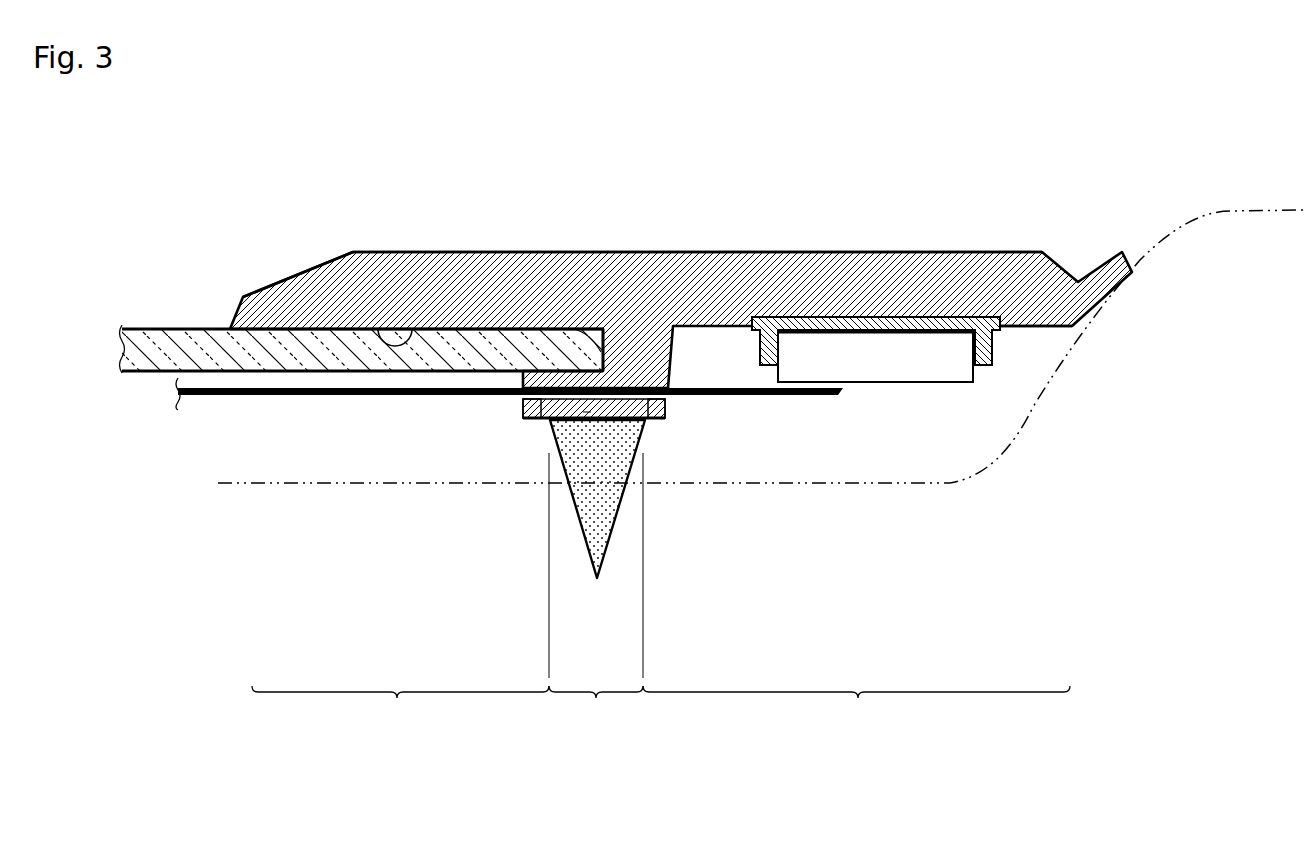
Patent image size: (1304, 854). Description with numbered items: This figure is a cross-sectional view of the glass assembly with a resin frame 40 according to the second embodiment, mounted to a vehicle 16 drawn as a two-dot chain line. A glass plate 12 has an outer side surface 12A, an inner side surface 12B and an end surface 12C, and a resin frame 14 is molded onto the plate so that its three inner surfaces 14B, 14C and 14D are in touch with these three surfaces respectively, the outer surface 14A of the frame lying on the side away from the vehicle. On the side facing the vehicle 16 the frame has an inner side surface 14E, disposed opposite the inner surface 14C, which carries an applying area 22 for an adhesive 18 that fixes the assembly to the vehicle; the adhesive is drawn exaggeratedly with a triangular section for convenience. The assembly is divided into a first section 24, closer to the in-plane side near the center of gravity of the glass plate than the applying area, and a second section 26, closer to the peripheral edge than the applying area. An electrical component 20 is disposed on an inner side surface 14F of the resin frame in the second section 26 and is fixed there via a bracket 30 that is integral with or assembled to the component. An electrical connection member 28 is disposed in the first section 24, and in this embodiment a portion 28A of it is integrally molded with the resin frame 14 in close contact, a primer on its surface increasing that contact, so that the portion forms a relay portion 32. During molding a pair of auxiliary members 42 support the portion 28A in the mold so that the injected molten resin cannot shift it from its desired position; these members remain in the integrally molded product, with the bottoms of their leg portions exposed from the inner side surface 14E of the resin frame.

The glass assembly with a resin frame 40 is at (855, 138).
The resin frame 14 is at (933, 240).
The outer surface of the resin frame 14A is at (773, 251).
The inner surface 14B is at (386, 333).
The inner surface 14C is at (543, 363).
The inner surface 14D is at (583, 338).
The inner side surface 14E is at (655, 420).
The inner side surface 14F is at (912, 332).
The glass plate 12 is at (139, 316).
The outer side surface 12A is at (190, 327).
The inner side surface 12B is at (135, 373).
The end surface 12C is at (606, 345).
The electrical connection member 28 is at (260, 410).
The portion of the electrical connection member 28A is at (642, 388).
The bracket 30 is at (995, 348).
The electrical component 20 is at (882, 384).
The auxiliary members 42 is at (523, 405).
The relay portion 32 is at (591, 422).
The adhesive 18 is at (590, 530).
The vehicle 16 is at (1272, 210).
The applying area 22 is at (596, 591).
The first section 24 is at (400, 708).
The second section 26 is at (856, 708).